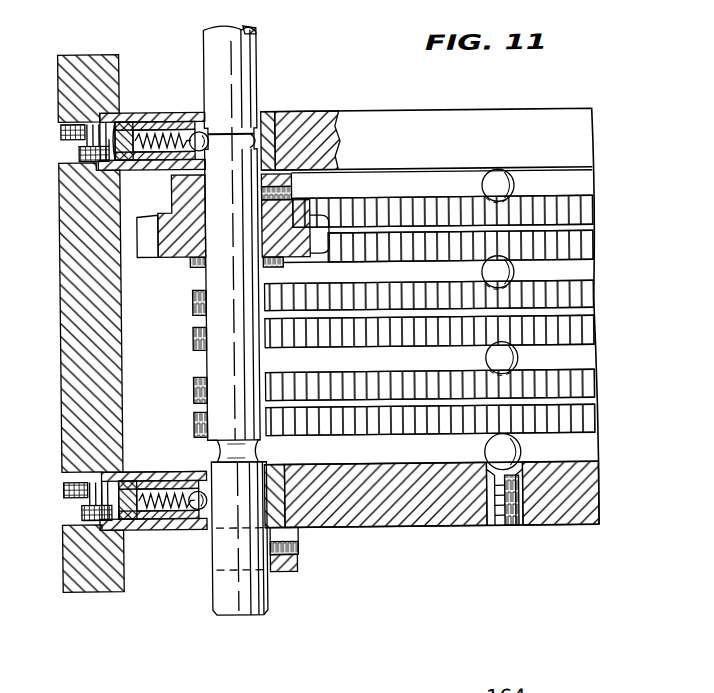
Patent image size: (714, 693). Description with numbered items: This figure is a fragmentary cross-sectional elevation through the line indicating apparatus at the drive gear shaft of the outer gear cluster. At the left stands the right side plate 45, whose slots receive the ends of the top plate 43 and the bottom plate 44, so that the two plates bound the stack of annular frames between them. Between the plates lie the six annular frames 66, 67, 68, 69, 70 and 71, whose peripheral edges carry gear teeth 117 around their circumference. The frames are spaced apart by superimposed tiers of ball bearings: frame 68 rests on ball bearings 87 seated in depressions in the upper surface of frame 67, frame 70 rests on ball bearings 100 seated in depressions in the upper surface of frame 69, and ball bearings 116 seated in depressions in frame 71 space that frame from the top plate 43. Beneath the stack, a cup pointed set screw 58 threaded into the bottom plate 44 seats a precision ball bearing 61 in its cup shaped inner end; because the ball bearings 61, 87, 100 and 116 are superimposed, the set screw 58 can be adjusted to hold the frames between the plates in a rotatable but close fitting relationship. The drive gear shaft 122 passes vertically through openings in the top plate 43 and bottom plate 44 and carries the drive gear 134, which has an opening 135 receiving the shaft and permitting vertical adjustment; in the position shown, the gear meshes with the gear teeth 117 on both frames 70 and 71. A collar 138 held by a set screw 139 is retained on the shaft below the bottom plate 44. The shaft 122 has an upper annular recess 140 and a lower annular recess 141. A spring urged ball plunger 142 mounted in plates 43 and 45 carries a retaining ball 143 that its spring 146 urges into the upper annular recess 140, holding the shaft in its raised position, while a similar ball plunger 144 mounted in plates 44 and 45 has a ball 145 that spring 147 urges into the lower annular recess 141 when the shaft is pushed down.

The top plate 43 is at (487, 148).
The bottom plate 44 is at (403, 529).
The right side plate 45 is at (72, 356).
The cup pointed set screw 58 is at (520, 514).
The precision ball-bearing 61 is at (482, 453).
The annular frame 66 is at (597, 421).
The annular frame 67 is at (597, 391).
The annular frame 68 is at (597, 338).
The annular frame 69 is at (597, 296).
The annular frame 70 is at (594, 244).
The annular frame 71 is at (594, 210).
The ball bearing 87 is at (499, 360).
The ball bearing 100 is at (496, 274).
The ball bearing 116 is at (496, 187).
The gear teeth 117 is at (594, 241).
The drive gear shaft 122 is at (227, 601).
The drive gear 134 is at (156, 257).
The opening 135 is at (181, 257).
The collar 138 is at (290, 571).
The set screw 139 is at (296, 547).
The upper annular recess 140 is at (273, 112).
The lower annular recess 141 is at (257, 447).
The spring urged ball plunger 142 is at (130, 111).
The retaining ball 143 is at (198, 132).
The ball plunger 144 is at (148, 528).
The retaining ball 145 is at (190, 515).
The spring 146 is at (143, 170).
The spring 147 is at (148, 470).